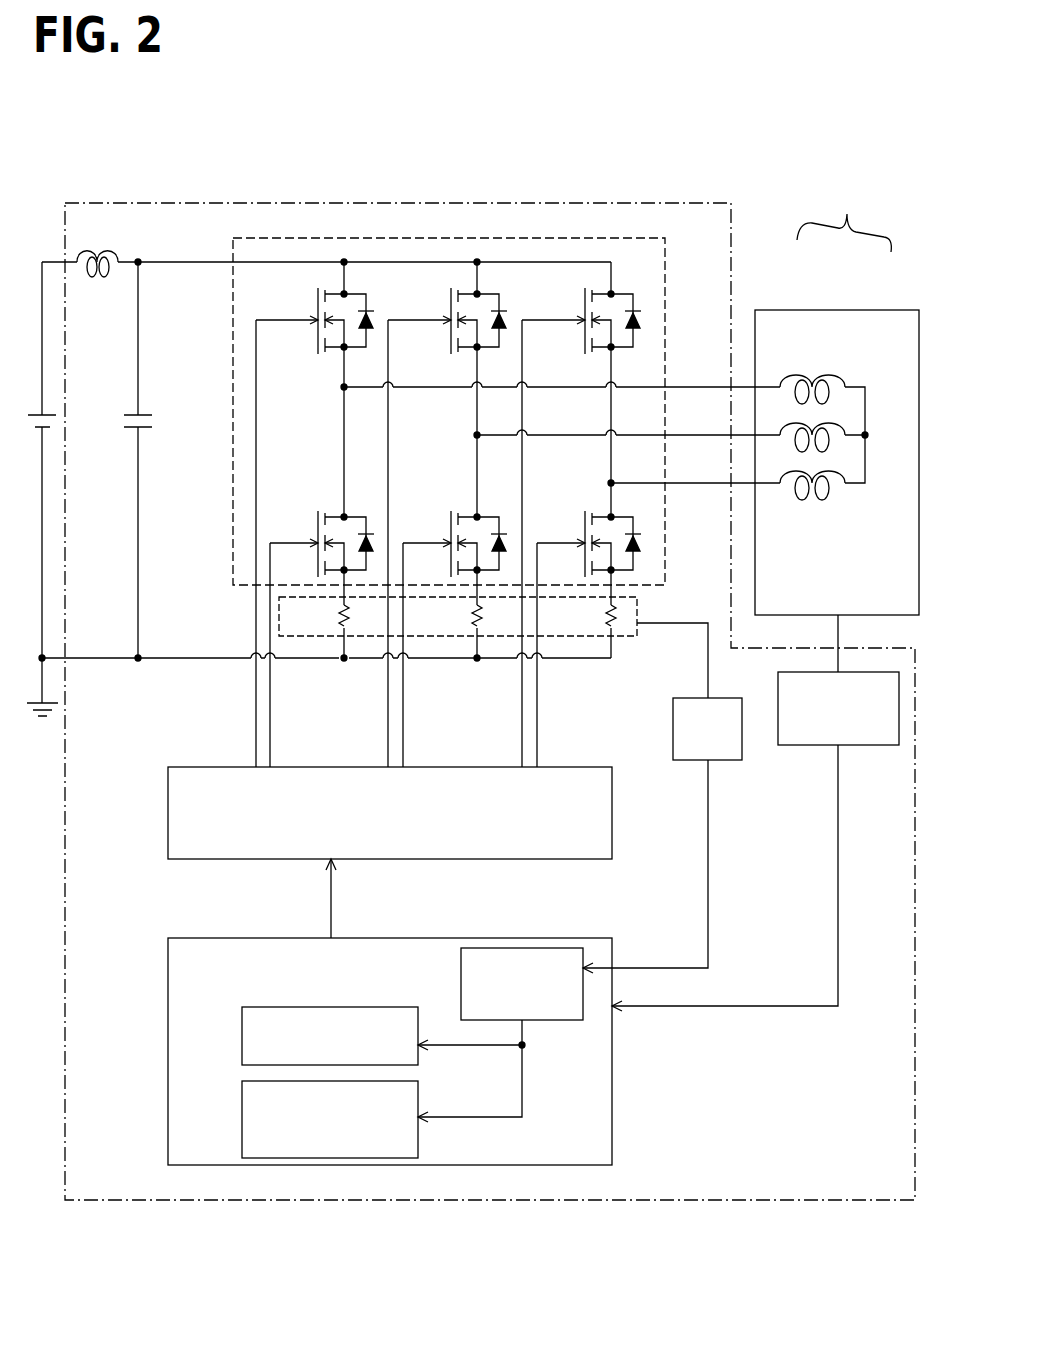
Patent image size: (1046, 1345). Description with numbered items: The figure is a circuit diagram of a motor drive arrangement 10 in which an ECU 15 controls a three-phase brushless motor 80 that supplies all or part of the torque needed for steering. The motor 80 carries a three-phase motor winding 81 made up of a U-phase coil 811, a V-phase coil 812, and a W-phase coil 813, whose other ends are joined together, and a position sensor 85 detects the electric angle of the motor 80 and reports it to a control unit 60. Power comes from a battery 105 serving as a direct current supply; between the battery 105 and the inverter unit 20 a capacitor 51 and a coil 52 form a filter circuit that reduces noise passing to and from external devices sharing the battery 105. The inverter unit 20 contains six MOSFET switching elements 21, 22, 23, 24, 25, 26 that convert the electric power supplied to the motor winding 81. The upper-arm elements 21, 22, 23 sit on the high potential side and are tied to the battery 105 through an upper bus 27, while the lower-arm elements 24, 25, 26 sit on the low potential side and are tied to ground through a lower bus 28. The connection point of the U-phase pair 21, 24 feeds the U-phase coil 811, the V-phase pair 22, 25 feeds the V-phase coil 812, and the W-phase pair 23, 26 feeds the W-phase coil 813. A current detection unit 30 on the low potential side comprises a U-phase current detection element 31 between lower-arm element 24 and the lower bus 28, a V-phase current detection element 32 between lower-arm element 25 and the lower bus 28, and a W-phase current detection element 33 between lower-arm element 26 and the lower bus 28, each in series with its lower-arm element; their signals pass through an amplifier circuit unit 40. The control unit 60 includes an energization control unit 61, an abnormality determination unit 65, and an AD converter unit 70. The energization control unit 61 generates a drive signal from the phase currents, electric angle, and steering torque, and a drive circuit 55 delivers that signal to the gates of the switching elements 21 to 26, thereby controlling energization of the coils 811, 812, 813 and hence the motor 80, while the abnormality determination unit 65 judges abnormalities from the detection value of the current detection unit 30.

The motor unit 10 is at (844, 221).
The ECU 15 is at (733, 238).
The inverter unit 20 is at (232, 545).
The switching element 21 is at (312, 301).
The switching element 22 is at (445, 301).
The switching element 23 is at (578, 301).
The switching element 24 is at (334, 515).
The switching element 25 is at (467, 515).
The switching element 26 is at (601, 515).
The upper bus 27 is at (198, 266).
The lower bus 28 is at (194, 656).
The current detection unit 30 is at (640, 610).
The U-phase current detection element 31 is at (338, 618).
The V-phase current detection element 32 is at (471, 618).
The W-phase current detection element 33 is at (605, 618).
The amplifier circuit unit 40 is at (673, 720).
The capacitor 51 is at (136, 412).
The coil 52 is at (94, 277).
The drive circuit 55 is at (196, 765).
The control unit 60 is at (199, 935).
The energization control unit 61 is at (242, 1033).
The abnormality determination unit 65 is at (242, 1118).
The AD converter unit 70 is at (460, 974).
The motor 80 is at (870, 309).
The motor winding 81 is at (810, 504).
The U-phase coil 811 is at (828, 382).
The V-phase coil 812 is at (844, 428).
The W-phase coil 813 is at (842, 475).
The position sensor 85 is at (864, 746).
The battery 105 is at (32, 412).